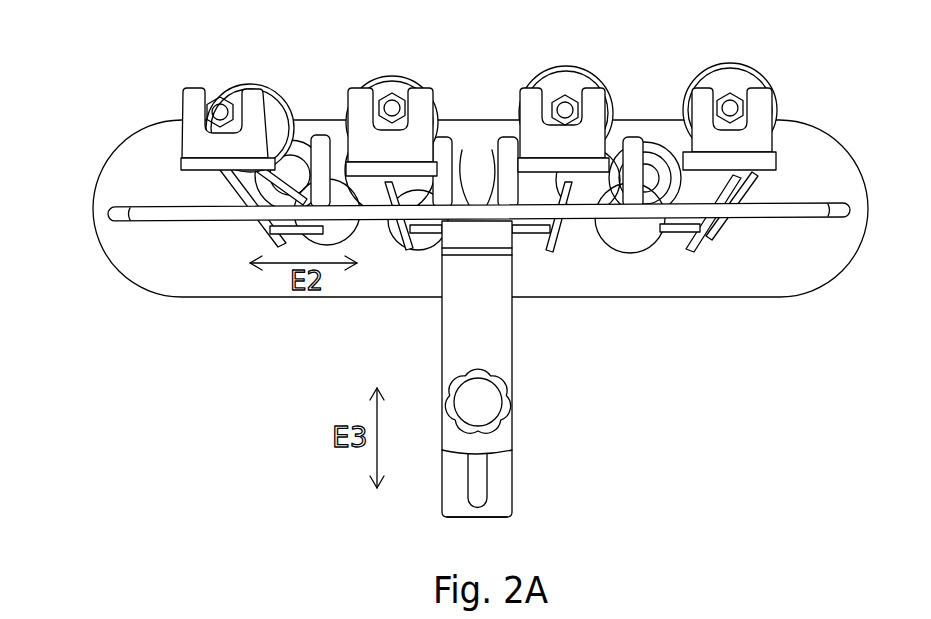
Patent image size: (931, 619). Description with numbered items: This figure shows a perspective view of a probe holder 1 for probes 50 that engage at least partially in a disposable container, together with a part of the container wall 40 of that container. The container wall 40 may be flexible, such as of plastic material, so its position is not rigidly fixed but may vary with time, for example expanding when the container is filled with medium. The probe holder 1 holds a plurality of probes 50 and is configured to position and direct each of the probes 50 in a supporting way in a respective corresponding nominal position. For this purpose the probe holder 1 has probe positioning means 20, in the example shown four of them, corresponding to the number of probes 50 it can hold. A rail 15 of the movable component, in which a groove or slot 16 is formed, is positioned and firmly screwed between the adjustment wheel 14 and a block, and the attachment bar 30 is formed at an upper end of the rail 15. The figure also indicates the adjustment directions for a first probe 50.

The probe holder 1 is at (503, 327).
The adjustment wheel 14 is at (492, 410).
The rail 15 is at (505, 495).
The slot 16 is at (477, 500).
The probe positioning means 20 is at (192, 102).
The attachment bar 30 is at (148, 215).
The container wall 40 is at (177, 287).
The probe 50 is at (280, 120).